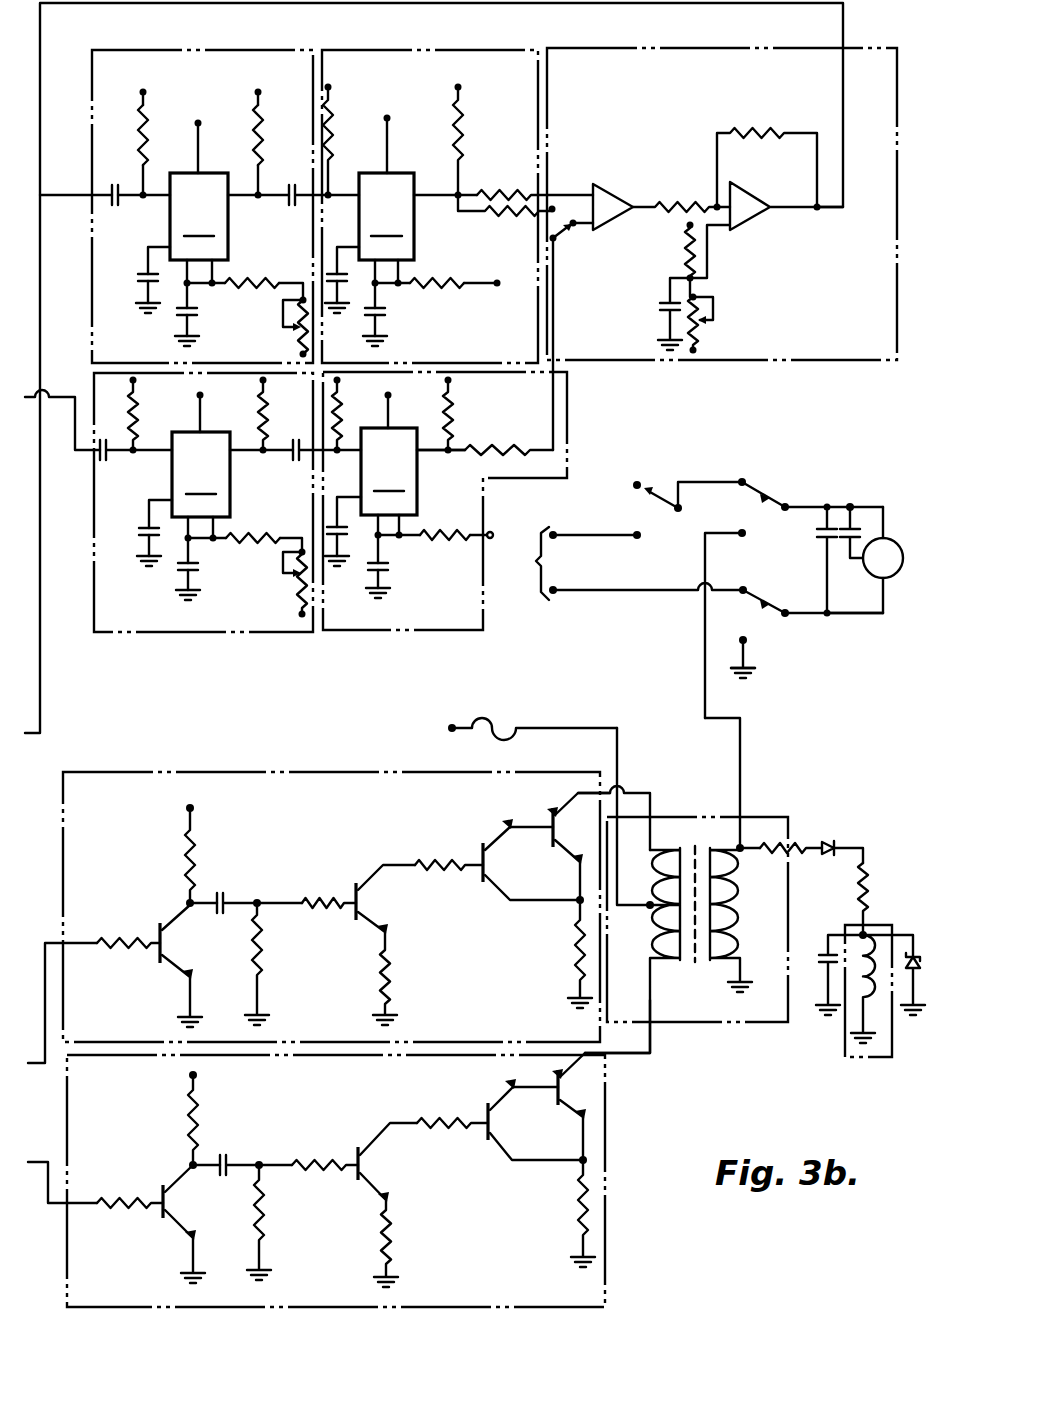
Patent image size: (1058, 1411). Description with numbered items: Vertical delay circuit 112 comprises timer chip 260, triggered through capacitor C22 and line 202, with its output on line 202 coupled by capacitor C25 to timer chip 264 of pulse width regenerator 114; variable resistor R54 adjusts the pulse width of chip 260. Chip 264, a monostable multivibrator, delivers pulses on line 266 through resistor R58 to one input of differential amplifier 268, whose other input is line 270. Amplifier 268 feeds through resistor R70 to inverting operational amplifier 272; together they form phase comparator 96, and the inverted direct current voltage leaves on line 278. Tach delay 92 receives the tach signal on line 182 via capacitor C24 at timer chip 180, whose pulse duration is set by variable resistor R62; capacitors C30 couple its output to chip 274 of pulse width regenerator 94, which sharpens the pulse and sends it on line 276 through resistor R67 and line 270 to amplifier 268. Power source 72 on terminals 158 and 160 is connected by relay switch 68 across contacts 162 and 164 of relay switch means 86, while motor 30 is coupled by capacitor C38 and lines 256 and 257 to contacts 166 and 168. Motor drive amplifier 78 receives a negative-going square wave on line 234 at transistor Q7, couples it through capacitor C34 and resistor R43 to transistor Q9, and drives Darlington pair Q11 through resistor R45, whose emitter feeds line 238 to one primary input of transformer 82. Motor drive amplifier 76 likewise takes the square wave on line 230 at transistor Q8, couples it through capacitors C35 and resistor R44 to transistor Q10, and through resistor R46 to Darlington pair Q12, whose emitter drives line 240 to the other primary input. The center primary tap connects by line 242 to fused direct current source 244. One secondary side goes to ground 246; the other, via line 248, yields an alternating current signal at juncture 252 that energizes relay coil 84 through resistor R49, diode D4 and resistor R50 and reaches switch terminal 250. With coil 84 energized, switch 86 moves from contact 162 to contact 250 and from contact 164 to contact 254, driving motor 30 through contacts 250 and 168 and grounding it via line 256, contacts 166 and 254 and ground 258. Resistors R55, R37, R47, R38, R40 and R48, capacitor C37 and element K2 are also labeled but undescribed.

The line 278 is at (846, 38).
The vertical delay circuit 112 is at (200, 50).
The line 202 is at (66, 195).
The capacitor C22 is at (114, 204).
The timer chip 260 is at (217, 207).
The variable resistor R54 is at (296, 334).
The capacitor C25 is at (292, 186).
The pulse width regenerator 114 is at (422, 50).
The resistor R55 is at (338, 140).
The timer chip 264 is at (418, 207).
The line 266 is at (440, 198).
The resistor R58 is at (504, 186).
The line 270 is at (556, 316).
The phase comparator 96 is at (690, 48).
The differential amplifier 268 is at (612, 186).
The resistor R70 is at (680, 198).
The operational amplifier 272 is at (752, 222).
The tach delay 92 is at (222, 632).
The line 182 is at (60, 396).
The capacitor C24 is at (108, 462).
The timer chip 180 is at (215, 485).
The variable resistor R62 is at (298, 584).
The capacitors C30 is at (297, 462).
The pulse width regenerator 94 is at (440, 632).
The timer chip 274 is at (423, 485).
The output line 276 is at (436, 458).
The resistor R67 is at (492, 446).
The source of electric power 72 is at (536, 562).
The terminal 158 is at (553, 528).
The terminal 160 is at (553, 596).
The relay switch 68 is at (662, 490).
The contact 162 is at (746, 478).
The contact 168 is at (790, 502).
The switch terminal 250 is at (740, 530).
The contact 164 is at (742, 596).
The contact 166 is at (790, 610).
The relay switch means 86 is at (770, 564).
The capacitor C37 is at (822, 540).
The line 257 is at (848, 502).
The capacitor C38 is at (862, 522).
The motor 30 is at (900, 576).
The line 256 is at (856, 614).
The contact 254 is at (748, 642).
The ground 258 is at (752, 682).
The fused direct current voltage source 244 is at (455, 726).
The line 242 is at (622, 744).
The line 248 is at (744, 752).
The motor drive amplifier 78 is at (296, 772).
The line 234 is at (50, 1004).
The resistor R37 is at (118, 936).
The transistor Q7 is at (165, 944).
The capacitor C34 is at (228, 893).
The resistor R43 is at (320, 906).
The transistor Q9 is at (361, 905).
The resistor R45 is at (434, 860).
The Darlington connected transistor pair Q11 is at (552, 834).
The resistor R47 is at (576, 950).
The line 238 is at (638, 792).
The transformer 82 is at (758, 1022).
The ground 246 is at (736, 990).
The line 240 is at (658, 1056).
The juncture 252 is at (746, 842).
The resistor R49 is at (804, 840).
The diode D4 is at (838, 844).
The resistor R50 is at (870, 892).
The relay coil 84 is at (882, 1058).
The relay coil K2 is at (878, 1010).
The motor drive amplifier 76 is at (607, 1142).
The line 230 is at (62, 1164).
The resistor R38 is at (120, 1196).
The transistor Q8 is at (169, 1206).
The resistor R40 is at (204, 1120).
The capacitors C35 is at (232, 1158).
The resistor R44 is at (318, 1172).
The transistor Q10 is at (365, 1166).
The resistor R46 is at (438, 1118).
The Darlington transistor pair Q12 is at (554, 1086).
The resistor R48 is at (578, 1210).